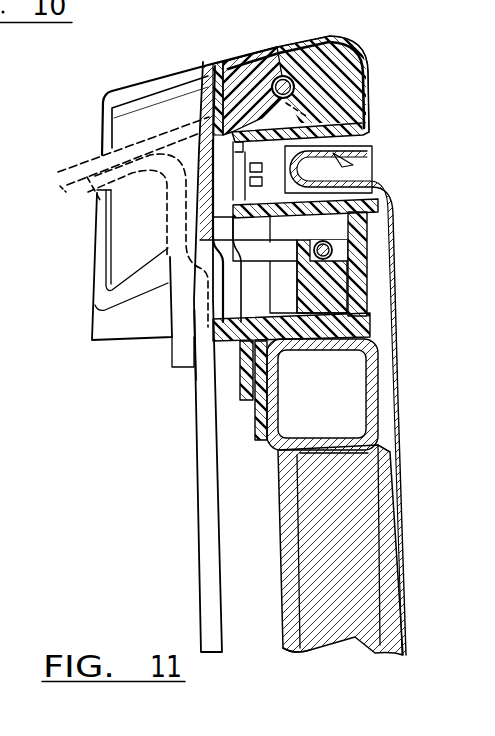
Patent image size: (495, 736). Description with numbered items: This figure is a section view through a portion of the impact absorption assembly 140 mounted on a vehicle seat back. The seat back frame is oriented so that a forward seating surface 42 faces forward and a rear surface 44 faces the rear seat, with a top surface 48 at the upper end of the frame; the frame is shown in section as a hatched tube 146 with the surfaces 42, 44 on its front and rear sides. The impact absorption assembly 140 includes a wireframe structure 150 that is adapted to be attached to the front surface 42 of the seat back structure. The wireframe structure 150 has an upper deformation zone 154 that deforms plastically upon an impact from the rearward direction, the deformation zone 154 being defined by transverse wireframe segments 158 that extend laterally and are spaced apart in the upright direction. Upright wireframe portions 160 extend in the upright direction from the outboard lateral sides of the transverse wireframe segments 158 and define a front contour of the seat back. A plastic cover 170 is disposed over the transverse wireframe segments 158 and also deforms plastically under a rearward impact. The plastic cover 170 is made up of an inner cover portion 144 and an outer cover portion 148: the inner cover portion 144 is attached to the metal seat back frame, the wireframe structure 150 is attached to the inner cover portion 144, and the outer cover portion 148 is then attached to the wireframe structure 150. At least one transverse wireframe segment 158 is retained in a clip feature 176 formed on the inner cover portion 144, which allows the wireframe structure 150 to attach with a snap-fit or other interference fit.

The forward seating surface 42 is at (281, 606).
The rear surface 44 is at (406, 613).
The top surface 48 is at (340, 37).
The impact absorption assembly 140 is at (157, 405).
The inner cover portion 144 is at (370, 328).
The tube member 146 is at (381, 550).
The outer cover portion 148 is at (132, 232).
The wireframe structure 150 is at (199, 545).
The upper deformation zone 154 is at (250, 73).
The transverse wireframe segments 158 is at (333, 252).
The upright wireframe portions 160 is at (195, 378).
The plastic cover 170 is at (163, 103).
The clip feature 176 is at (358, 287).